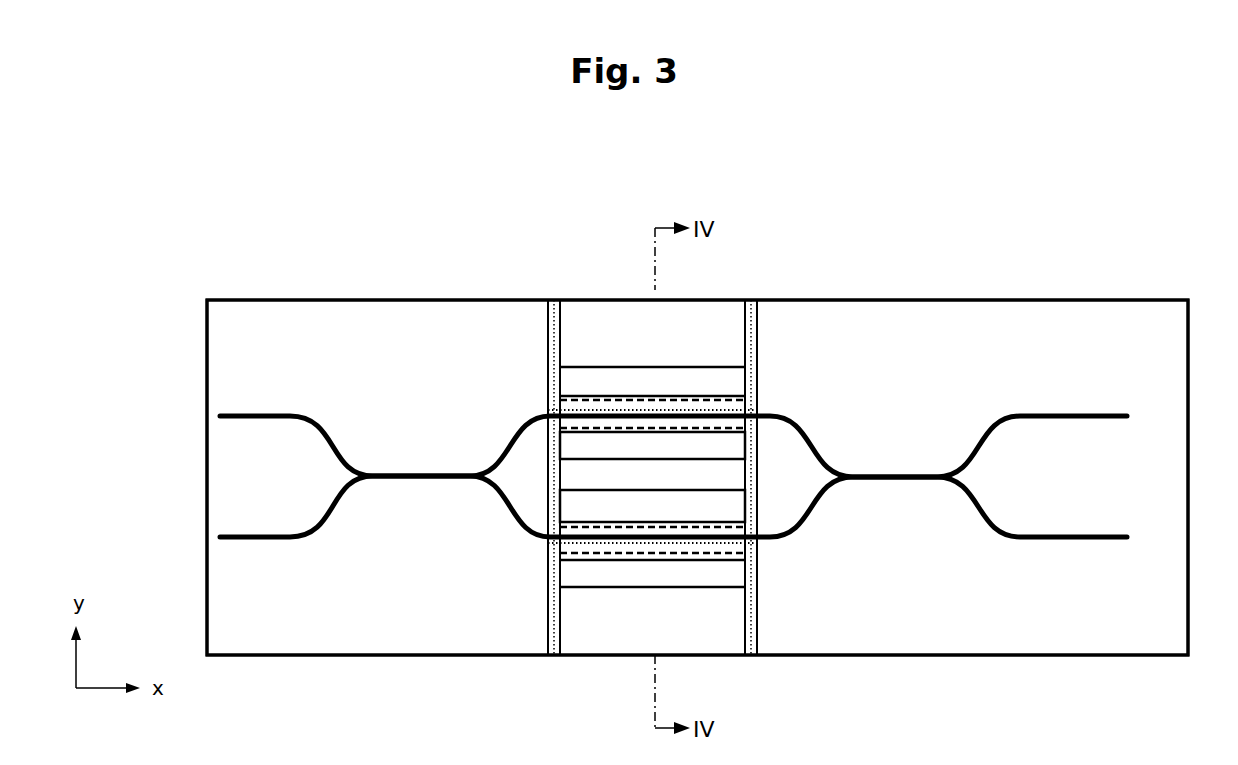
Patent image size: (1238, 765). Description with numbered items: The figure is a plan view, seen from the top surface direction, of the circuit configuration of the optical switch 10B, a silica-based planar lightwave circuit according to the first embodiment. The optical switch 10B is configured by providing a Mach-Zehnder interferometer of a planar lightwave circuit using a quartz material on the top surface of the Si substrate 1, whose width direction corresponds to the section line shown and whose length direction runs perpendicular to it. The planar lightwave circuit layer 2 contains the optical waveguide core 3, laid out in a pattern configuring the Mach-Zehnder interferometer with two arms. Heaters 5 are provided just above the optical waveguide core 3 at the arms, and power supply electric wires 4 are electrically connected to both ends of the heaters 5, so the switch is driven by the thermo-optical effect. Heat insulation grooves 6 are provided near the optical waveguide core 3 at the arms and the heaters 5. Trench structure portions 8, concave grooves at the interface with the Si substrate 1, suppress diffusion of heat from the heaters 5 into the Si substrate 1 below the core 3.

The optical switch 10B is at (1143, 200).
The Si substrate 1 is at (1193, 455).
The planar lightwave circuit layer 2 is at (1190, 372).
The optical waveguide core 3 is at (277, 412).
The power supply electric wires 4 is at (553, 300).
The heaters 5 is at (712, 408).
The heat insulation grooves 6 is at (572, 386).
The trench structure portions 8 is at (606, 396).